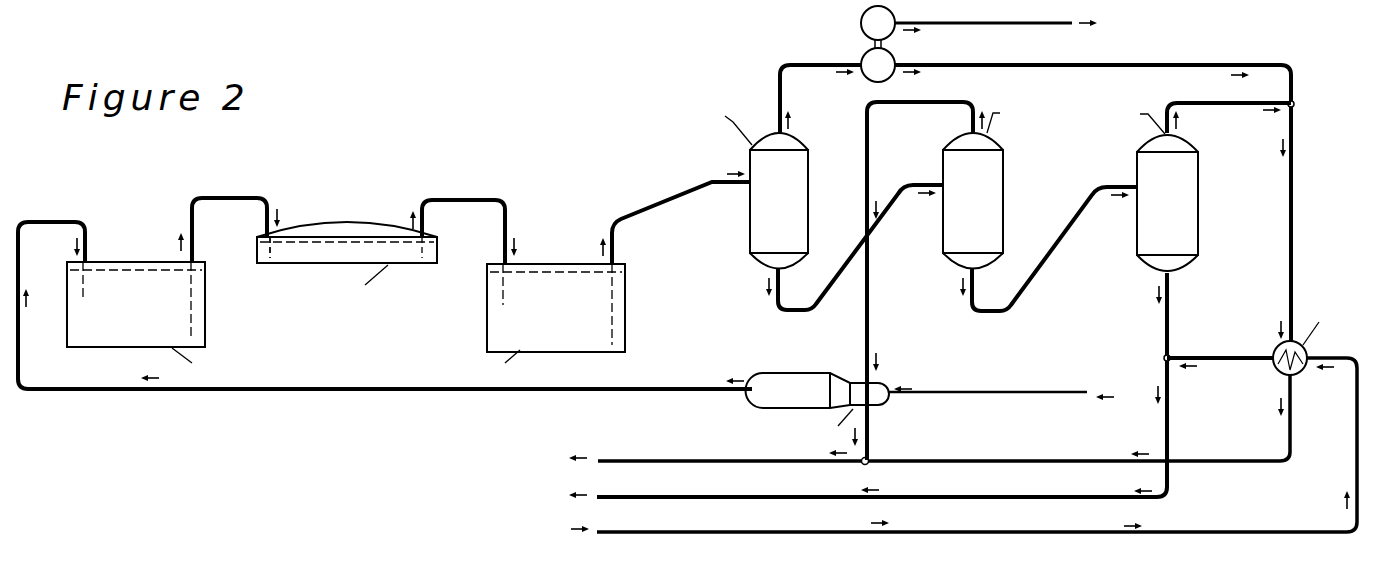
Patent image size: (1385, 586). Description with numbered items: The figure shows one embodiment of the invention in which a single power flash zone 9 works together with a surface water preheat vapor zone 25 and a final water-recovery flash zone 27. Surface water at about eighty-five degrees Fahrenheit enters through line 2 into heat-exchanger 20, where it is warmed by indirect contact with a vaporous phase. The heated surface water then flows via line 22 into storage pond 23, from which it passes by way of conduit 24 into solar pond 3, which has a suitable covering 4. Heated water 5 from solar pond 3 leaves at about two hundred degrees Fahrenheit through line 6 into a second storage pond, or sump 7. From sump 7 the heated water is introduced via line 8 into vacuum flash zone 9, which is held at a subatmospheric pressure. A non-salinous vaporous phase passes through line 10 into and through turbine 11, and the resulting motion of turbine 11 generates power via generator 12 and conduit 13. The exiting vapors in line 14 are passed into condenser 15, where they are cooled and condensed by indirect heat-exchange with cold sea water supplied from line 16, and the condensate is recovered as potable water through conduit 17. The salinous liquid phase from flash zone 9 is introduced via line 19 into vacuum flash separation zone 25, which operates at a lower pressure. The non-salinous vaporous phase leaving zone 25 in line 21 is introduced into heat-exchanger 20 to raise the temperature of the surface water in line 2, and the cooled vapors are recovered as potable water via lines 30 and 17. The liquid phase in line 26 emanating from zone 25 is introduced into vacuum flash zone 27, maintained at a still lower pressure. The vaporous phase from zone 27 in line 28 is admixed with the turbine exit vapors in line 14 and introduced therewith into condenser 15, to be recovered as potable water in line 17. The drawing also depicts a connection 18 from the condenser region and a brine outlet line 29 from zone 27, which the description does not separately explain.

The line 2 is at (985, 392).
The solar pond 3 is at (414, 268).
The covering 4 is at (343, 222).
The heated water 5 is at (266, 252).
The line 6 is at (462, 198).
The sump 7 is at (628, 326).
The line 8 is at (686, 196).
The vacuum flash zone 9 is at (810, 194).
The line 10 is at (782, 90).
The turbine 11 is at (862, 77).
The generator 12 is at (862, 29).
The conduit 13 is at (945, 25).
The line 14 is at (1005, 66).
The condenser 15 is at (1283, 373).
The line 16 is at (1325, 358).
The conduit 17 is at (1291, 430).
The pipe from condenser to line 29 18 is at (1200, 358).
The line 19 is at (880, 222).
The heat-exchanger 20 is at (800, 373).
The line 21 is at (900, 104).
The line 22 is at (40, 221).
The storage pond 23 is at (207, 339).
The conduit 24 is at (240, 196).
The vacuum flash separation zone 25 is at (1003, 200).
The line 26 is at (1062, 245).
The vacuum flash zone 27 is at (1200, 200).
The line 28 is at (1205, 105).
The concentrated brine outlet line 29 is at (1165, 332).
The line 30 is at (869, 436).